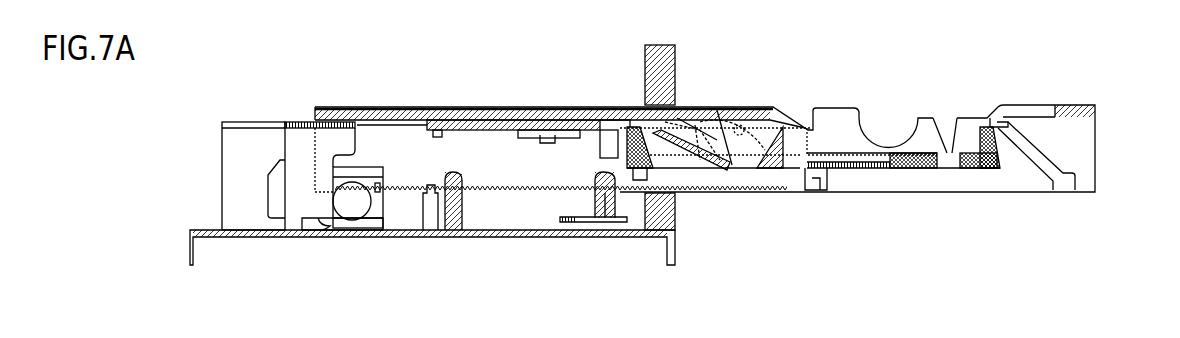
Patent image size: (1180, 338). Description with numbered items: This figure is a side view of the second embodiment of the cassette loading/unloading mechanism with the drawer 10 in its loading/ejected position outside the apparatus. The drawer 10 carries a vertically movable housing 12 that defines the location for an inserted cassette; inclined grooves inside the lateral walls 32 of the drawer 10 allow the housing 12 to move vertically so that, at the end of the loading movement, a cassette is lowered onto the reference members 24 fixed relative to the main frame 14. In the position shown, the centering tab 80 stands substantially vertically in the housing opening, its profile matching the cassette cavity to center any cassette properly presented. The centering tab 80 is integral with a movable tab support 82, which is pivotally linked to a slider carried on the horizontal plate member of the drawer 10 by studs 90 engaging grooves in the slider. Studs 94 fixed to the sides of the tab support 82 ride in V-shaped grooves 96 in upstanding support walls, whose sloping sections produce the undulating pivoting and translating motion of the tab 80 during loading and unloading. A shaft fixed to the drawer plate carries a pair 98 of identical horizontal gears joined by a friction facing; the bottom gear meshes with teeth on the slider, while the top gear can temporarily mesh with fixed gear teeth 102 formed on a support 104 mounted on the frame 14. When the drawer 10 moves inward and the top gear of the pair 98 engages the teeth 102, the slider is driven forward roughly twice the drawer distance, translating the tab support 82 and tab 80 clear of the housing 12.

The drawer 10 is at (1038, 102).
The housing 12 is at (850, 108).
The main frame 14 is at (243, 237).
The reference members 24 is at (430, 213).
The lateral walls of the drawer 32 is at (1087, 133).
The centering tab 80 is at (783, 137).
The tab support 82 is at (717, 168).
The studs 90 is at (432, 138).
The studs 94 is at (730, 118).
The V-shaped grooves 96 is at (697, 107).
The pair of gears 98 is at (570, 130).
The gear teeth 102 is at (290, 122).
The support 104 is at (238, 155).